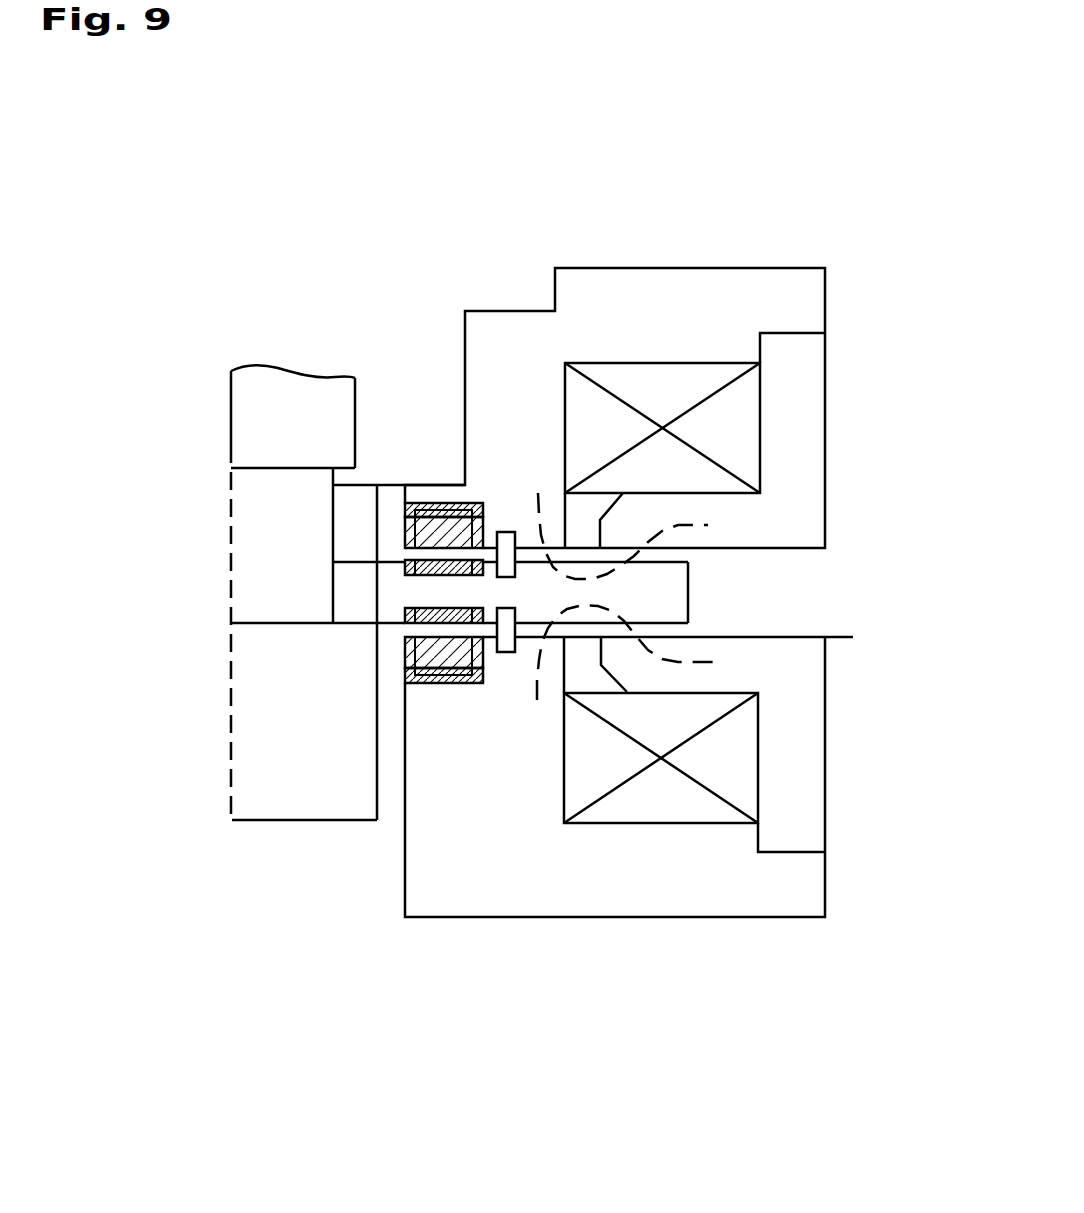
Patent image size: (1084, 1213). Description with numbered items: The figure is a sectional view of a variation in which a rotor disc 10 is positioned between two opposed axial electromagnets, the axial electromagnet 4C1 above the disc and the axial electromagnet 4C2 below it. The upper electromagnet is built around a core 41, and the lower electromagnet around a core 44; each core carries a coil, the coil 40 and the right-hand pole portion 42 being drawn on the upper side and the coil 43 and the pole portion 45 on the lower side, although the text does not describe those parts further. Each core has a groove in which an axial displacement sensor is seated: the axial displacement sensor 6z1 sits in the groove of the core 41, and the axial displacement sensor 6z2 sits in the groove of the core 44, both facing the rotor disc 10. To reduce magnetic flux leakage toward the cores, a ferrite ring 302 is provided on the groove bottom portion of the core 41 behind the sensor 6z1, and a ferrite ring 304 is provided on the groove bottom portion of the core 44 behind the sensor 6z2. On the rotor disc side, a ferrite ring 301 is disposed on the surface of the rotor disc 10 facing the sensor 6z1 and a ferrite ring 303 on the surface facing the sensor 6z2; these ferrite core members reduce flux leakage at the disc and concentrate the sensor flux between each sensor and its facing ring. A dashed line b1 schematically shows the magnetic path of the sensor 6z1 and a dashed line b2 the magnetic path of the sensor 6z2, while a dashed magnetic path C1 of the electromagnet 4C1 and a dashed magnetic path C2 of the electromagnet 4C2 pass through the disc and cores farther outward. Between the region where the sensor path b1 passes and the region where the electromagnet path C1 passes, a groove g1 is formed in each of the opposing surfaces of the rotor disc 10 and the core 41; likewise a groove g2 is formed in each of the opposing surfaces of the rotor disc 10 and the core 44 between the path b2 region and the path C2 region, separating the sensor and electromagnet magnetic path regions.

The rotor disc 10 is at (343, 593).
The ferrite ring 301 is at (413, 567).
The ferrite ring 302 is at (415, 515).
The ferrite ring 303 is at (403, 613).
The ferrite ring 304 is at (407, 683).
The axial displacement sensor 6z1 is at (415, 530).
The axial displacement sensor 6z2 is at (408, 657).
The magnetic path b1 is at (299, 471).
The magnetic path b2 is at (302, 743).
The groove g1 is at (509, 562).
The groove g2 is at (506, 630).
The coil 40 is at (727, 430).
The core 41 is at (618, 288).
The magnetic pole 42 is at (803, 497).
The coil 43 is at (692, 805).
The core 44 is at (530, 887).
The magnetic pole 45 is at (815, 733).
The axial electromagnet 4C1 is at (672, 335).
The axial electromagnet 4C2 is at (683, 862).
The magnetic path C1 is at (710, 525).
The magnetic path C2 is at (702, 662).